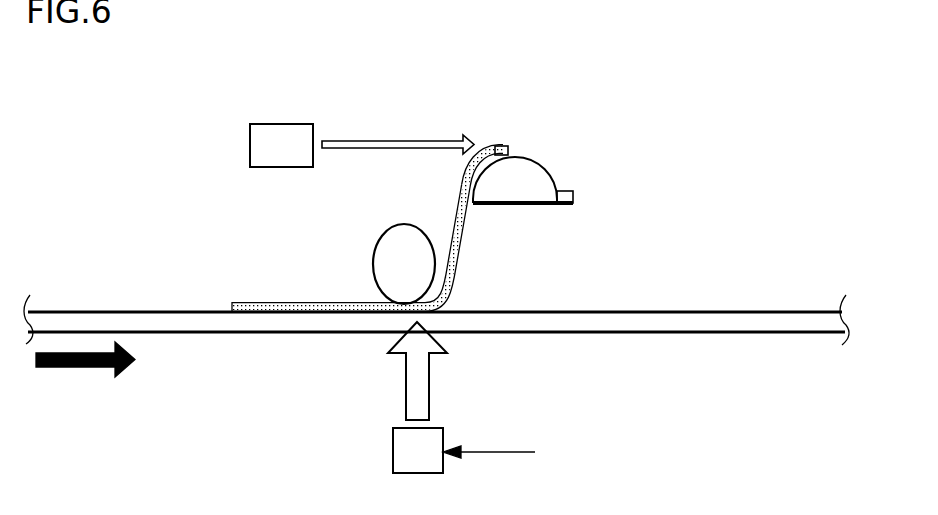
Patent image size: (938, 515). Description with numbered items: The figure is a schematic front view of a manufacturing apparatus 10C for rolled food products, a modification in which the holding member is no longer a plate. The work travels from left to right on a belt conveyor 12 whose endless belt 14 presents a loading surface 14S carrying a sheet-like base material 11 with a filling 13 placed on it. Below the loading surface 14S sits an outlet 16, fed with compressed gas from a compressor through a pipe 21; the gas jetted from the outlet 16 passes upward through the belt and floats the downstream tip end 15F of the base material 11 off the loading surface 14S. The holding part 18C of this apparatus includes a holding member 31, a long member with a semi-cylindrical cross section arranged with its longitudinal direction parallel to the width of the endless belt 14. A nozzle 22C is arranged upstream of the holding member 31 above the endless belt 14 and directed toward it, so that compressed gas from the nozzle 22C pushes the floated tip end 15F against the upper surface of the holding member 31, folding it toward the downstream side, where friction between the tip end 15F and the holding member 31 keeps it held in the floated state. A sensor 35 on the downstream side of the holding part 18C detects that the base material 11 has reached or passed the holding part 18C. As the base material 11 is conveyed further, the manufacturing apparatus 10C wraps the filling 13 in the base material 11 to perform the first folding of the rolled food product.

The manufacturing apparatus 10C is at (712, 102).
The base material 11 is at (262, 302).
The belt conveyor 12 is at (788, 293).
The filling 13 is at (383, 254).
The endless belt 14 is at (436, 285).
The loading surface 14S is at (693, 308).
The tip end 15F is at (493, 146).
The outlet 16 is at (393, 455).
The holding part 18C is at (571, 153).
The pipe 21 is at (495, 452).
The nozzle 22C is at (277, 123).
The holding member 31 is at (525, 168).
The sensor 35 is at (575, 198).